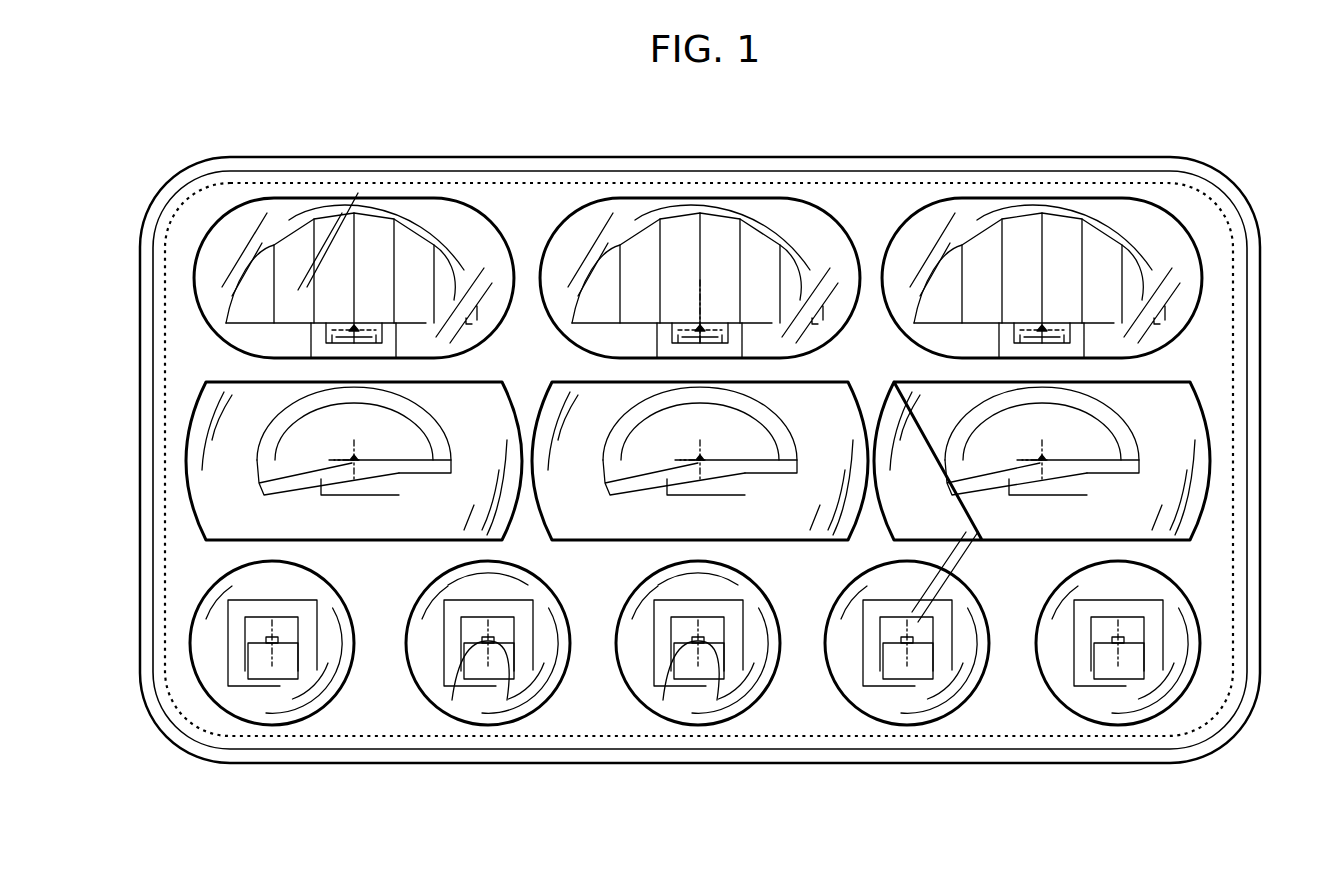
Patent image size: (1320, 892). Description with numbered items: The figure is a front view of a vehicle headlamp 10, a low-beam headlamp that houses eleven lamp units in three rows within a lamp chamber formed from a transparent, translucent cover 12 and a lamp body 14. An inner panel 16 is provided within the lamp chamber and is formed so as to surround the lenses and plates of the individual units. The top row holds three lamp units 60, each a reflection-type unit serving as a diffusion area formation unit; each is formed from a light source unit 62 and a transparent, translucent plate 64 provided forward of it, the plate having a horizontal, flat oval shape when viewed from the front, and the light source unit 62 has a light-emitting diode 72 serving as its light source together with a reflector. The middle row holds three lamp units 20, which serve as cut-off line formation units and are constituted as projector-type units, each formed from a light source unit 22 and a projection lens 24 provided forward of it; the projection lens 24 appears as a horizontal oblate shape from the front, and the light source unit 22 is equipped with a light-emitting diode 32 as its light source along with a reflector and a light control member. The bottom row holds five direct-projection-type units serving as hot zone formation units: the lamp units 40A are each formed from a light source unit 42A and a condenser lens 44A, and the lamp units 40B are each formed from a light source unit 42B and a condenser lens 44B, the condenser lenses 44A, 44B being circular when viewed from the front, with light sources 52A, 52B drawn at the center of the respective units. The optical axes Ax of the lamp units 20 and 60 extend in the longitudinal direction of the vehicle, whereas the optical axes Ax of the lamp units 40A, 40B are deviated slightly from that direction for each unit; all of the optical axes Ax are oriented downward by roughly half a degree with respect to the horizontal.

The vehicle headlamp 10 is at (722, 415).
The translucent cover 12 is at (752, 171).
The lamp body 14 is at (682, 157).
The inner panel 16 is at (1203, 330).
The lamp unit 20 is at (745, 430).
The light source unit 22 is at (685, 458).
The projection lens 24 is at (848, 450).
The light-emitting diode 32 is at (719, 435).
The lamp unit 40A is at (752, 664).
The lamp unit 40B is at (698, 670).
The light source unit 42A is at (652, 704).
The light source unit 42B is at (439, 704).
The condenser lens 44A is at (719, 564).
The condenser lens 44B is at (503, 564).
The light source 52A is at (674, 712).
The light source 52B is at (464, 712).
The lamp unit 60 is at (716, 267).
The light source unit 62 is at (658, 375).
The translucent plate 64 is at (753, 229).
The light-emitting diode 72 is at (662, 224).
The optical axis Ax is at (703, 327).